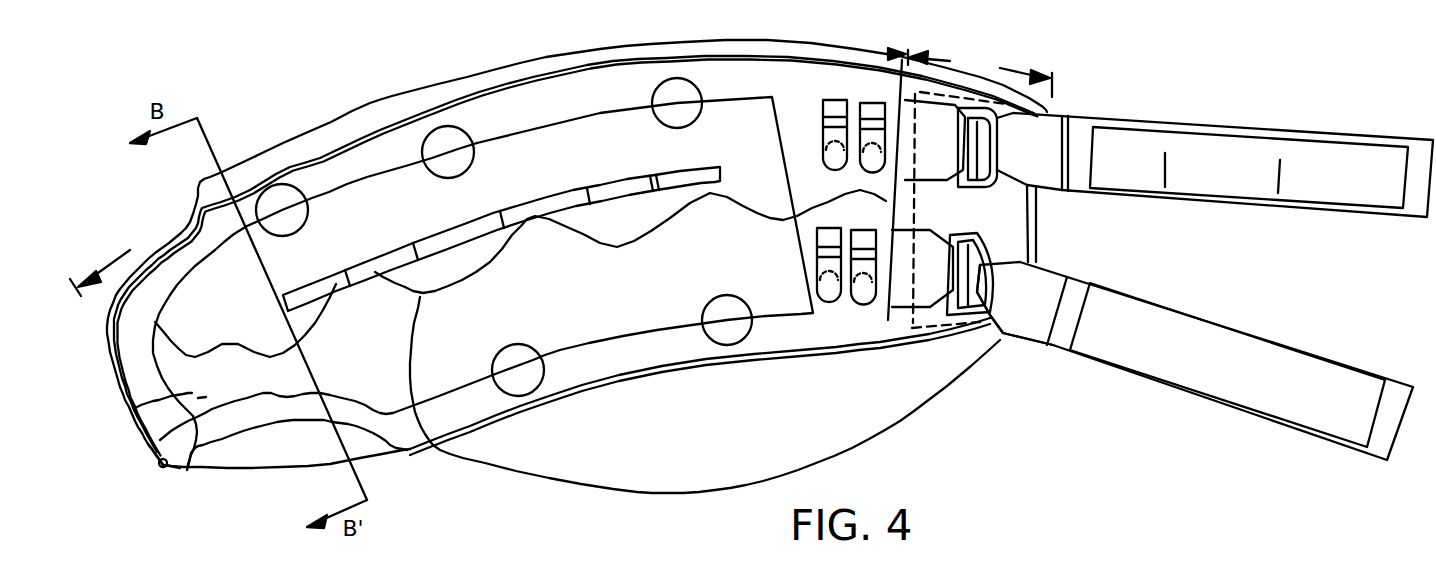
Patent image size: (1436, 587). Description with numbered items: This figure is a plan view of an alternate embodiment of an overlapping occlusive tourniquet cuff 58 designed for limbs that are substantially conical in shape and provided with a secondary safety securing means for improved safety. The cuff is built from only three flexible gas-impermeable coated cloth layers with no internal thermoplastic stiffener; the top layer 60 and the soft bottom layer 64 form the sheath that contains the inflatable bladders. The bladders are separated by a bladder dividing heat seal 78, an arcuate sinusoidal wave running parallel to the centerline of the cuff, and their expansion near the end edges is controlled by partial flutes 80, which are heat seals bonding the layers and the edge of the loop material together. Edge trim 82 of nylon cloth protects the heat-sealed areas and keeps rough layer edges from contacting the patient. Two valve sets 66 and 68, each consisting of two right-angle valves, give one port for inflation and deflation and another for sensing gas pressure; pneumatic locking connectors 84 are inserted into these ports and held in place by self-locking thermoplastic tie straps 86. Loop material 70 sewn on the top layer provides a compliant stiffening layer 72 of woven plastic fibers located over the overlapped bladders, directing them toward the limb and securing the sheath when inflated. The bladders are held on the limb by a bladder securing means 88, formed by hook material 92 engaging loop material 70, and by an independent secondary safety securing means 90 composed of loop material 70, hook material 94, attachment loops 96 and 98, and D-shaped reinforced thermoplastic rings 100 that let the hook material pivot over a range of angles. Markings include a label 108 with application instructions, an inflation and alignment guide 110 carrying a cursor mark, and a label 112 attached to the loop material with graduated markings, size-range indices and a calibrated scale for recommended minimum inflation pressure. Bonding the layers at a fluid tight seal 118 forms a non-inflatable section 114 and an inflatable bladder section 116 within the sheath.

The overlapping occlusive tourniquet cuff 58 is at (523, 170).
The top layer 60 is at (177, 430).
The bottom layer 64 is at (278, 453).
The valve set 66 is at (815, 149).
The valve set 68 is at (230, 425).
The loop material 70 is at (550, 342).
The compliant stiffening layer 72 is at (117, 522).
The bladder dividing heat seal 78 is at (437, 377).
The partial flutes 80 is at (430, 147).
The edge trim 82 is at (123, 277).
The pneumatic locking connectors 84 is at (833, 110).
The self-locking thermoplastic tie straps 86 is at (825, 160).
The bladder securing means 88 is at (613, 457).
The secondary safety securing means 90 is at (971, 359).
The hook material 92 is at (898, 334).
The hook material 94 is at (1420, 157).
The attachment loop 96 is at (1028, 383).
The attachment loop 98 is at (935, 312).
The reinforced thermoplastic rings 100 is at (973, 320).
The label 108 is at (1190, 178).
The inflation and alignment guide 110 is at (1007, 225).
The label 112 is at (300, 170).
The non-inflatable section 114 is at (980, 73).
The inflatable bladder section 116 is at (518, 64).
The fluid tight seal 118 is at (900, 67).